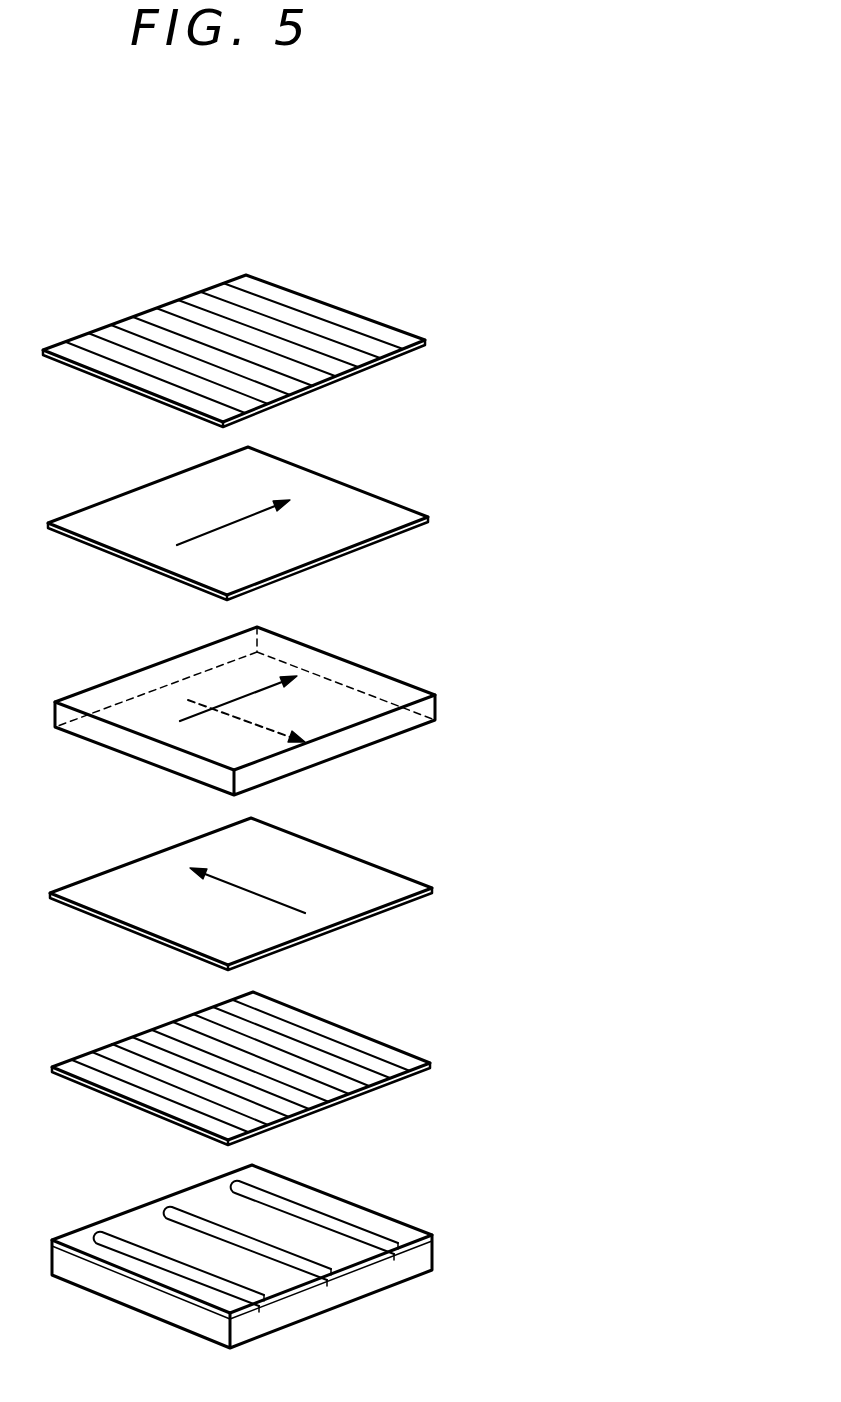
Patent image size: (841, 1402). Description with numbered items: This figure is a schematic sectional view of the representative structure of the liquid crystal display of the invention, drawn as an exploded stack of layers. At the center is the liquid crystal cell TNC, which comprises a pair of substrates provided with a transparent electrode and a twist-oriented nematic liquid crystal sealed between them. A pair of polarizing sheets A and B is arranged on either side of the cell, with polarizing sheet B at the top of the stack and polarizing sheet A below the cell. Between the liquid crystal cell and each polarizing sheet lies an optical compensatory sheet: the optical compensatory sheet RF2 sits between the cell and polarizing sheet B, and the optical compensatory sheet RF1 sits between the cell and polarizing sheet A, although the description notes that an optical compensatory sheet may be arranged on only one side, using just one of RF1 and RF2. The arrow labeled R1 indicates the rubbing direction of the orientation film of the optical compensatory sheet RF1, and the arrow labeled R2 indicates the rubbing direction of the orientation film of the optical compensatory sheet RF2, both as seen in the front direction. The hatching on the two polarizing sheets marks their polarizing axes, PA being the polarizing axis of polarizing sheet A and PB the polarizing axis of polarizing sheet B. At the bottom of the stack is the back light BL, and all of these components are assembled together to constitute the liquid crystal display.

The polarizing sheet B is at (249, 351).
The polarizing axis PB is at (324, 320).
The optical compensatory sheet RF2 is at (267, 523).
The rubbing direction R2 is at (233, 516).
The liquid crystal cell TNC is at (281, 711).
The optical compensatory sheet RF1 is at (269, 894).
The rubbing direction R1 is at (250, 889).
The polarizing sheet A is at (255, 1068).
The polarizing axis PA is at (157, 1040).
The back light BL is at (265, 1256).